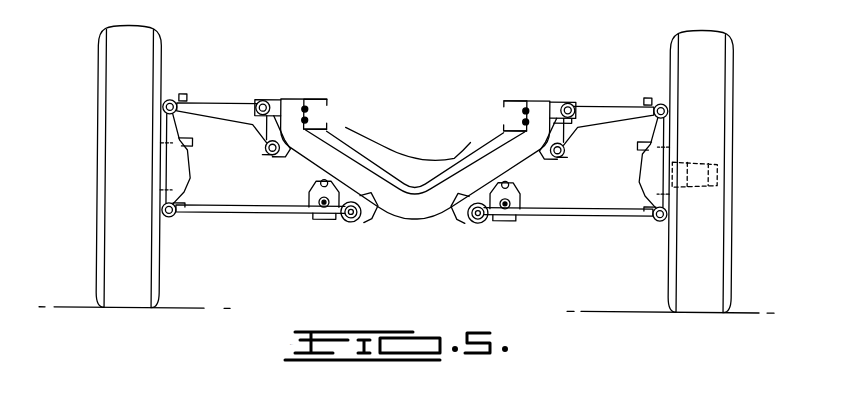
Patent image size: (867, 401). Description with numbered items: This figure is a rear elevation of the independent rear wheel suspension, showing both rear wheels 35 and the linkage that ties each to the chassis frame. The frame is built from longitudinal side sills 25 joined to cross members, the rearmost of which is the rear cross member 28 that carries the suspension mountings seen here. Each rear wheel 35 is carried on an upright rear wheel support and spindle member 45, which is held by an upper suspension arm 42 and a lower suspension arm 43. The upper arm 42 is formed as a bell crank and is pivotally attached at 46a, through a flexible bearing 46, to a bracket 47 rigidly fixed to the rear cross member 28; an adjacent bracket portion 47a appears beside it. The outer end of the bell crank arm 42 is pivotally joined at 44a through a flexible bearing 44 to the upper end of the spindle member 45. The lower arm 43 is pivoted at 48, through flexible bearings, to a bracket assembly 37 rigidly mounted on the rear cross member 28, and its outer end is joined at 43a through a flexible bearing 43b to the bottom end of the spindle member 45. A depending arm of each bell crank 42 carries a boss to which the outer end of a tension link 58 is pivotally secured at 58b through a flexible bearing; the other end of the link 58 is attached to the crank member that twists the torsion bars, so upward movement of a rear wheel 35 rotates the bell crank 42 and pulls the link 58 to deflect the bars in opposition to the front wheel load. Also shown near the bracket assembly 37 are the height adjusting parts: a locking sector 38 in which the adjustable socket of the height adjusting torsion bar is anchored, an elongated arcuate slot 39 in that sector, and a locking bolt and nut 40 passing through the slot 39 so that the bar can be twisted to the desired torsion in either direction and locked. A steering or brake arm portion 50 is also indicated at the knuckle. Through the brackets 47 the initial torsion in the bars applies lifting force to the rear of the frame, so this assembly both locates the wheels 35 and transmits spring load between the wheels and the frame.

The longitudinal side sill 25 is at (320, 100).
The rear cross member 28 is at (370, 174).
The rear wheel 35 is at (105, 109).
The bracket assembly 37 is at (372, 214).
The locking sector 38 is at (310, 210).
The arcuate slot 39 is at (318, 185).
The locking bolt and nut 40 is at (332, 180).
The upper suspension arm 42 is at (207, 106).
The lower suspension arm 43 is at (248, 215).
The outer pivot joint of lower arm 43a is at (180, 206).
The flexible bearing 43b is at (172, 221).
The flexible bearing 44 is at (172, 102).
The outer pivot joint of upper arm 44a is at (186, 100).
The rear wheel support and spindle member 45 is at (172, 127).
The flexible bearing 46 is at (262, 102).
The pivot of upper arm 46a is at (252, 124).
The bracket 47 is at (280, 101).
The bracket flange 47a is at (557, 161).
The pivot of lower arm 48 is at (349, 222).
The steering arm 50 is at (181, 146).
The tension link 58 is at (281, 158).
The outer pivot of tension link 58b is at (266, 158).